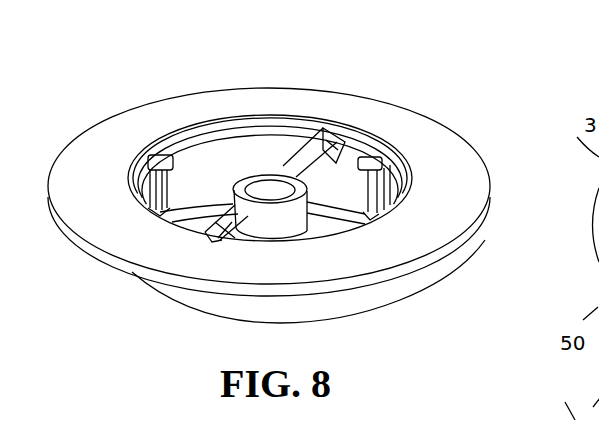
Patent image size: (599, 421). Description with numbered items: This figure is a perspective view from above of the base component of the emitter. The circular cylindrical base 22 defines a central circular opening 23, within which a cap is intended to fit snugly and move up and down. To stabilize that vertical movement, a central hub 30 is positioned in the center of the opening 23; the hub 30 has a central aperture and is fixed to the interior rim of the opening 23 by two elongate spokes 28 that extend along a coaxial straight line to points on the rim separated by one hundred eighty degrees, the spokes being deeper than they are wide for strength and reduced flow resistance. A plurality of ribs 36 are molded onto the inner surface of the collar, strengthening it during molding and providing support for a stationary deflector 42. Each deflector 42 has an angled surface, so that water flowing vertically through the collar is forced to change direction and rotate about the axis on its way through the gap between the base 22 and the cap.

The base 22 is at (430, 106).
The central circular opening 23 is at (306, 128).
The spokes 28 is at (242, 222).
The central hub 30 is at (287, 216).
The ribs 36 is at (195, 198).
The deflector 42 is at (164, 156).